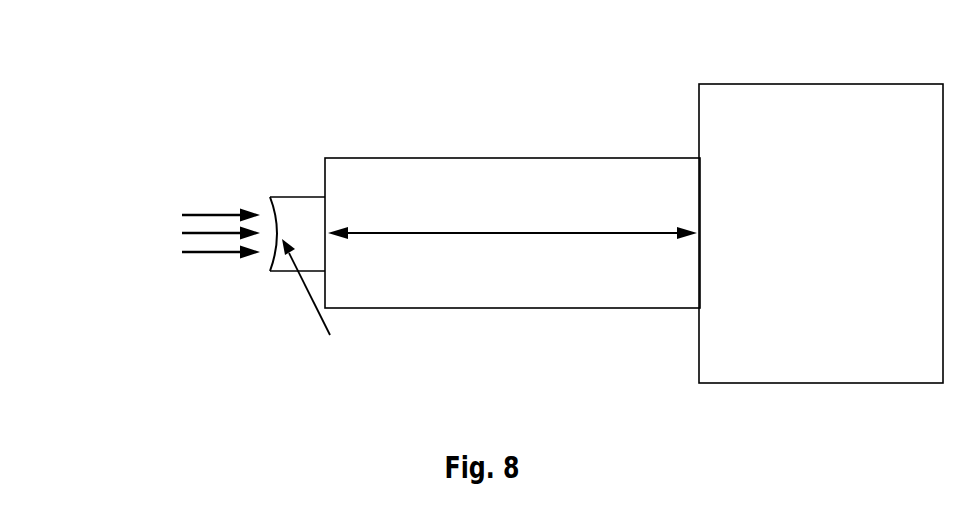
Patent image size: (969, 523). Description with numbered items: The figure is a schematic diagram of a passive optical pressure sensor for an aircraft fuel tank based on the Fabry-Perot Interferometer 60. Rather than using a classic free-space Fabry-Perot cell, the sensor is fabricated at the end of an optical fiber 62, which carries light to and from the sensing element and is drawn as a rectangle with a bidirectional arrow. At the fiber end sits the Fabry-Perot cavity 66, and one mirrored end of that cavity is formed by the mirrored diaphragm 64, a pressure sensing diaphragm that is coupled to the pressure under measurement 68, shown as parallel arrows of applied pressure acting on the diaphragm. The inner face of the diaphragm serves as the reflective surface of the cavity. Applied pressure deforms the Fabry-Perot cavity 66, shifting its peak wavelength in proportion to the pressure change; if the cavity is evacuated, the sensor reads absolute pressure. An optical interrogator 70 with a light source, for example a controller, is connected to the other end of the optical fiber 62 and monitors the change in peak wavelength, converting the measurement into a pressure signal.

The Fabry-Perot Interferometer 60 is at (147, 81).
The optical fiber 62 is at (478, 158).
The mirrored diaphragm 64 is at (254, 205).
The Fabry-Perot cavity 66 is at (293, 187).
The pressure under measurement 68 is at (178, 249).
The optical interrogator 70 is at (777, 84).